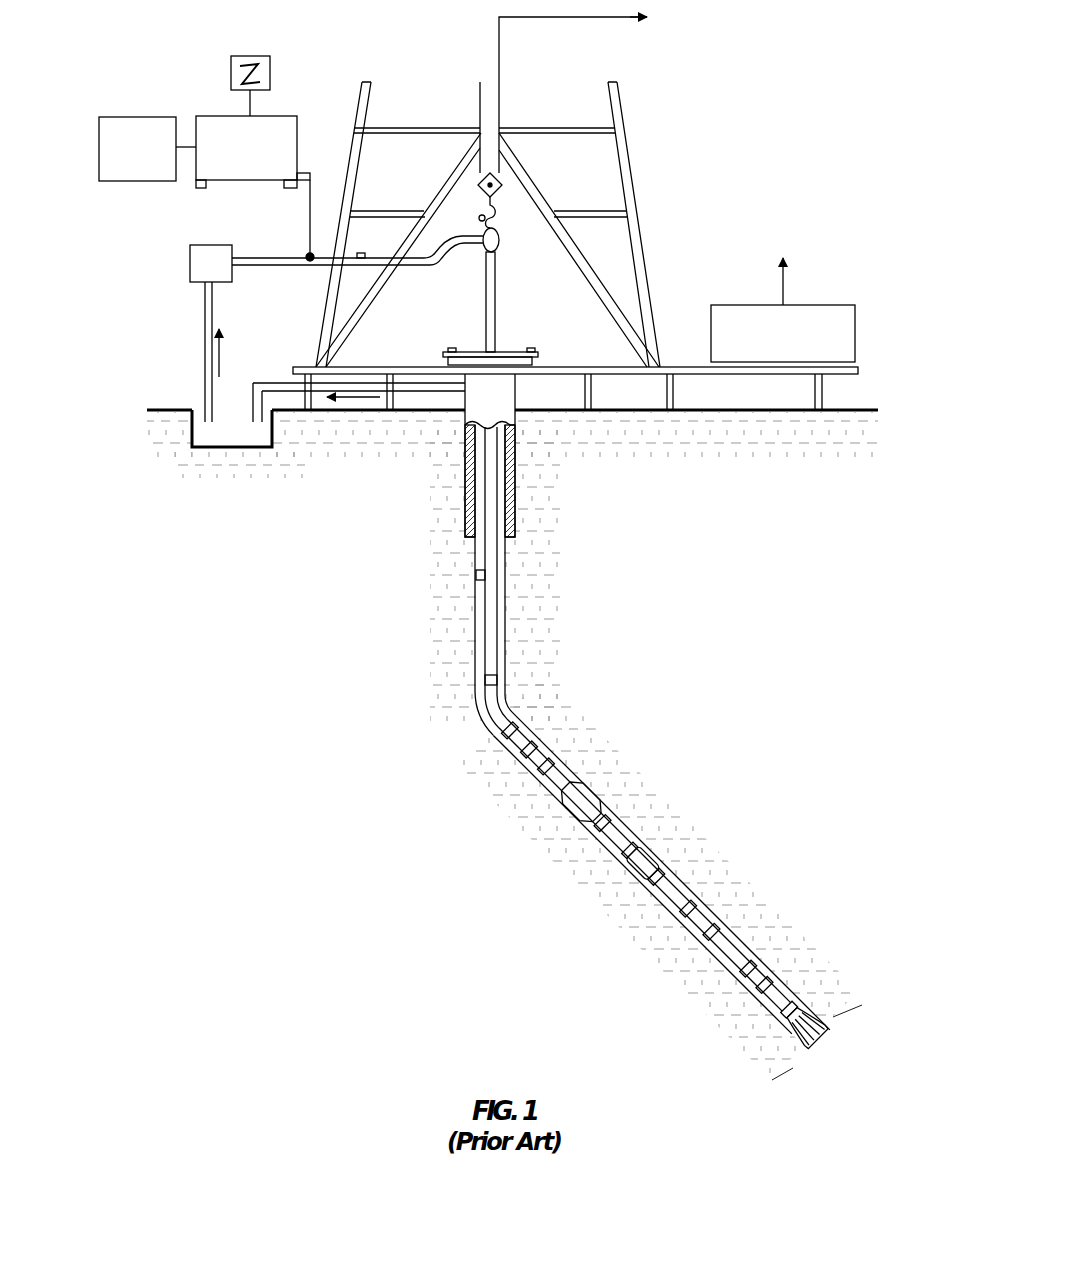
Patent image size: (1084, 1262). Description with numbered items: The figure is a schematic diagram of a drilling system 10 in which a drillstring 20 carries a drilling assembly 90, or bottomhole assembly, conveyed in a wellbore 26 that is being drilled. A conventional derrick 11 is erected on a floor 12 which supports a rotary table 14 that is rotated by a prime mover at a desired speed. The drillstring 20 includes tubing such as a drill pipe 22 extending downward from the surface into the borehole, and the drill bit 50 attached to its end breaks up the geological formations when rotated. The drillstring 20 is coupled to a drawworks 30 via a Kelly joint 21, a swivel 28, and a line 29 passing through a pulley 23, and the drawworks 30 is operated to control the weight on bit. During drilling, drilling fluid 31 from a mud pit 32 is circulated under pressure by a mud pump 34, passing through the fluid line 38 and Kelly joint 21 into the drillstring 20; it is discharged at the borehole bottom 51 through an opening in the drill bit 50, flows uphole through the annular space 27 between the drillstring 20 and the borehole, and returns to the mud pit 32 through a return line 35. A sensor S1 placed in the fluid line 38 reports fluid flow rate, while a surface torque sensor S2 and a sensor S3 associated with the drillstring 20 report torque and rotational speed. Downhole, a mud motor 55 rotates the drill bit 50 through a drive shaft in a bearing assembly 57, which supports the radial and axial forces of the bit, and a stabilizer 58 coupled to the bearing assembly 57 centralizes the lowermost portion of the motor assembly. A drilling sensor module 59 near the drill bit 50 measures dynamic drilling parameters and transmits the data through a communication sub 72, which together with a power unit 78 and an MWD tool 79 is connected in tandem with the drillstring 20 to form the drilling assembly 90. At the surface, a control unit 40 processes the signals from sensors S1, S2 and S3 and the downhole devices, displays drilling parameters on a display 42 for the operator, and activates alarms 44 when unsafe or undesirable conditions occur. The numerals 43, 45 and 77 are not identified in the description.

The drilling system 10 is at (405, 33).
The derrick 11 is at (643, 225).
The floor 12 is at (664, 368).
The rotary table 14 is at (512, 352).
The drillstring 20 is at (504, 627).
The Kelly joint 21 is at (497, 297).
The drill pipe 22 is at (475, 598).
The pulley 23 is at (498, 192).
The wellbore 26 is at (512, 702).
The annular space 27 is at (525, 732).
The swivel 28 is at (480, 247).
The line 29 is at (501, 110).
The drawworks 30 is at (836, 305).
The drilling fluid 31 is at (195, 438).
The mud pit 32 is at (262, 443).
The mud pump 34 is at (198, 246).
The return line 35 is at (432, 390).
The fluid line 38 is at (298, 266).
The surface control unit 40 is at (221, 116).
The display/monitor 42 is at (250, 57).
The pressure sensor 43 is at (306, 253).
The alarms 44 is at (157, 183).
The signal line 45 is at (306, 173).
The drill bit 50 is at (828, 1020).
The borehole bottom 51 is at (797, 1067).
The downhole motor 55 is at (679, 887).
The bearing assembly 57 is at (784, 981).
The stabilizer 58 is at (794, 998).
The drilling sensor module 59 is at (793, 1031).
The communication sub 72 is at (478, 692).
The stabilizer 77 is at (572, 815).
The power unit 78 is at (505, 745).
The MWD tool 79 is at (517, 764).
The drilling assembly 90 is at (686, 790).
The sensor S1 is at (358, 253).
The surface torque sensor S2 is at (540, 352).
The sensor S3 is at (447, 352).